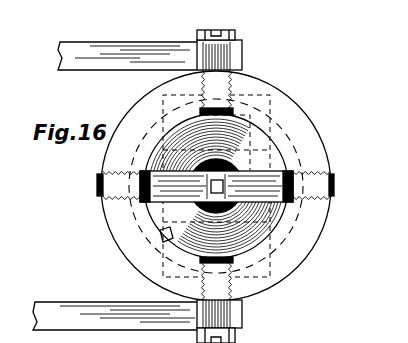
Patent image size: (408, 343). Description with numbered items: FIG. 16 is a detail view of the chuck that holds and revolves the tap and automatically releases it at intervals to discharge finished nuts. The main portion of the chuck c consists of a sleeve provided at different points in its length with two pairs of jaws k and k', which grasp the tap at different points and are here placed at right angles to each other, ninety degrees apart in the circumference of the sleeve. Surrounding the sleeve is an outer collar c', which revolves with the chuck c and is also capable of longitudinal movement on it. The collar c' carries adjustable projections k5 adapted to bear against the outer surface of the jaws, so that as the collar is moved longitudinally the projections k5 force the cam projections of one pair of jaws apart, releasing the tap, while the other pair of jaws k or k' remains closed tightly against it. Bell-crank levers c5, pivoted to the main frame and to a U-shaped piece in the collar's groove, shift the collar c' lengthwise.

The outer collar c' is at (238, 186).
The chuck c is at (216, 186).
The bell-crank lever c5 is at (96, 303).
The jaws k is at (198, 168).
The jaws k' is at (211, 187).
The adjustable projections k5 is at (100, 186).